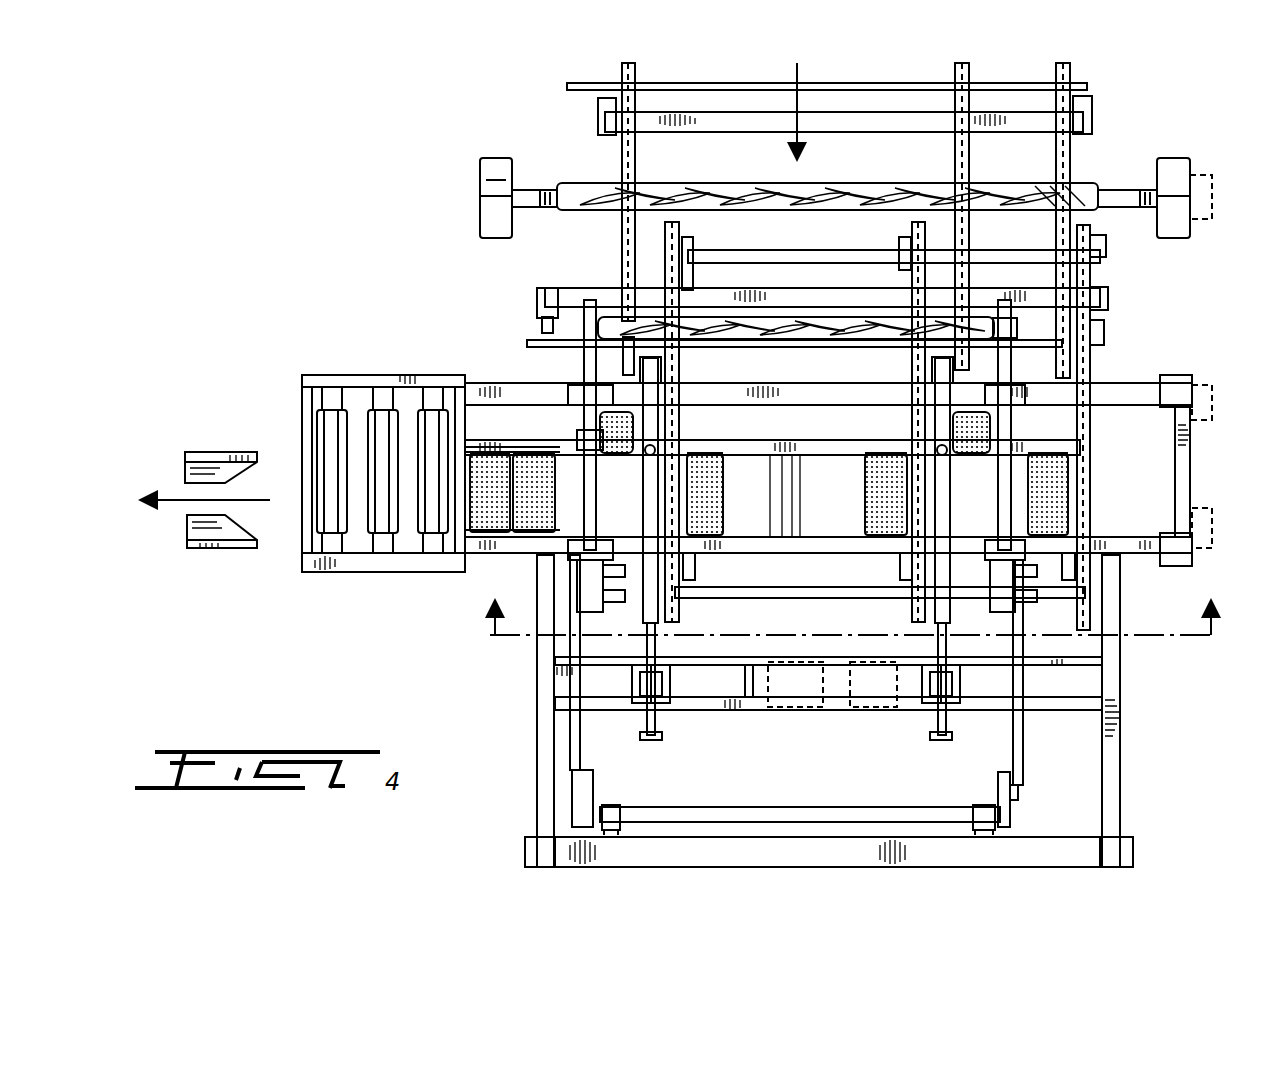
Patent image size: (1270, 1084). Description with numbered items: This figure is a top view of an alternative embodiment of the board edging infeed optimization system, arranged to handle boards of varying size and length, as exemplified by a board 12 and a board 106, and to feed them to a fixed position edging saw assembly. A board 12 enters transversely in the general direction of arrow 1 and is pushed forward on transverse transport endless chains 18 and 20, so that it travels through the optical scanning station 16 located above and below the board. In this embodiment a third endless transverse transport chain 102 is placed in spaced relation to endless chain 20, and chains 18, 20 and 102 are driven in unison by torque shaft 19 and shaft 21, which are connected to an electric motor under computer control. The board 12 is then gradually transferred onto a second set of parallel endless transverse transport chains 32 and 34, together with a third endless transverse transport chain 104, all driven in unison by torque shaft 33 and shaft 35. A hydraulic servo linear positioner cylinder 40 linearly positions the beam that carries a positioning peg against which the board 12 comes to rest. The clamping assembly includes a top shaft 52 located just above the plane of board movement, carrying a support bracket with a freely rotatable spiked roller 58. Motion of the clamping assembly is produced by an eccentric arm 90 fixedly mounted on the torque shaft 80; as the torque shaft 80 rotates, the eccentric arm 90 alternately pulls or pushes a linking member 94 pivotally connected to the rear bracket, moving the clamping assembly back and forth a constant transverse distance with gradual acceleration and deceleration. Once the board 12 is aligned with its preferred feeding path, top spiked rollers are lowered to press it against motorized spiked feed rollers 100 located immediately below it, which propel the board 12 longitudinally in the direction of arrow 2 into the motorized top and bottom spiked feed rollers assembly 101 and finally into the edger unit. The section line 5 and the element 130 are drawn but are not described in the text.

The arrow 1 is at (797, 72).
The arrow 2 is at (167, 505).
The section line 5- 5 is at (852, 635).
The board 12 is at (975, 322).
The optical scanning station 16 is at (492, 200).
The endless chain 18 is at (620, 76).
The torque axle 19 is at (875, 82).
The endless chain 20 is at (969, 87).
The shaft 21 is at (790, 349).
The endless transverse transport chain 32 is at (686, 387).
The torque axle 33 is at (882, 260).
The endless transverse transport chain 34 is at (905, 380).
The shaft 35 is at (709, 589).
The hydraulic servo linear positioner cylinder 40 is at (937, 720).
The top shaft 52 is at (1005, 492).
The spiked roller 58 is at (633, 440).
The torque shaft 80 is at (840, 814).
The eccentric arm 90 is at (1013, 802).
The linking member 94 is at (1016, 640).
The motorized spiked feed roller 100 is at (707, 503).
The top and bottom spiked feed rollers assembly 101 is at (356, 400).
The third endless transverse transport chain 102 is at (1064, 78).
The third endless transverse transport chain 104 is at (1090, 377).
The board 106 is at (1087, 183).
The end brush roller 130 is at (1060, 513).